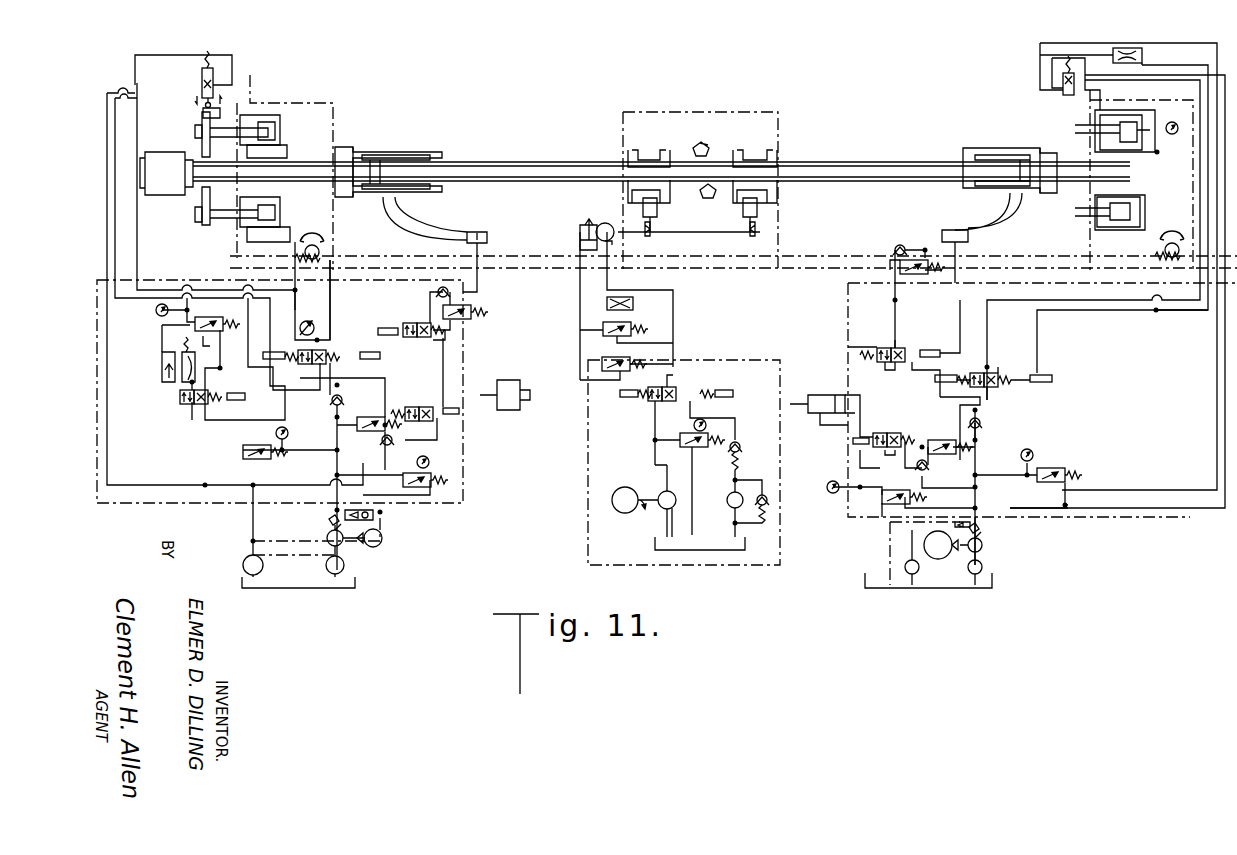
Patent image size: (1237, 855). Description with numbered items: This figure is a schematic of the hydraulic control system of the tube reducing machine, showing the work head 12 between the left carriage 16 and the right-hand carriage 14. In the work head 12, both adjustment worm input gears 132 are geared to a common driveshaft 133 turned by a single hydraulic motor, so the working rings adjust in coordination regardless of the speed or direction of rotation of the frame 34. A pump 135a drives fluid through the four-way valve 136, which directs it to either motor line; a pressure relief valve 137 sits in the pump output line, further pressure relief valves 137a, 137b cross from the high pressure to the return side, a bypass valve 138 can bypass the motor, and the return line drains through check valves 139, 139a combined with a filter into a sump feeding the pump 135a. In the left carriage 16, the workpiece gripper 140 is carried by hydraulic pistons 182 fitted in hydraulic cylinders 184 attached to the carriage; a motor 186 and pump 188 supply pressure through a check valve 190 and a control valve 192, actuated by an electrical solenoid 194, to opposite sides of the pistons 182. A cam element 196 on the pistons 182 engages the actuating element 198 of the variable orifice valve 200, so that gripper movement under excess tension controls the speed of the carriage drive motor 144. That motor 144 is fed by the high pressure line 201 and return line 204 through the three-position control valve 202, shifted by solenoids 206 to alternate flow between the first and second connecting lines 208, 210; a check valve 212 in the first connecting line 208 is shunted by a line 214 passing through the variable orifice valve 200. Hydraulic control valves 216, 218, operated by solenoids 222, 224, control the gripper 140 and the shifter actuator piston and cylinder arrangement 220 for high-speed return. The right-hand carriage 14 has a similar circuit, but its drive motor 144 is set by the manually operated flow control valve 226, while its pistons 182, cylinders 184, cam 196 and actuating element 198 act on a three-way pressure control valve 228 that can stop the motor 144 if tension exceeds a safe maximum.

The work head 12 is at (620, 115).
The right-hand carriage 14 is at (1010, 105).
The left carriage 16 is at (346, 118).
The frame 34 is at (609, 224).
The adjustment worm input gears 132 is at (651, 238).
The common driveshaft 133 is at (705, 230).
The pump 135a is at (663, 490).
The four-way valve 136 is at (684, 390).
The pressure relief valve 137 is at (695, 450).
The pressure relief valve 137a is at (603, 327).
The pressure relief valve 137b is at (602, 364).
The bypass valve 138 is at (615, 297).
The check valve 139 is at (742, 447).
The check valve 139a is at (768, 504).
The workpiece gripper 140 is at (395, 152).
The carriage drive motor 144 is at (320, 250).
The hydraulic pistons 182 is at (275, 130).
The hydraulic cylinders 184 is at (258, 115).
The motor 186 is at (382, 540).
The pump 188 is at (328, 544).
The check valve 190 is at (343, 401).
The control valve 192 is at (208, 405).
The electrical solenoid 194 is at (226, 385).
The cam element 196 is at (199, 122).
The actuating element 198 is at (203, 110).
The variable orifice valve 200 is at (203, 86).
The high pressure line 201 is at (337, 450).
The three-position control valve 202 is at (325, 363).
The return line 204 is at (365, 359).
The solenoids 206 is at (272, 359).
The first connecting line 208 is at (298, 306).
The second connecting line 210 is at (331, 314).
The check valve 212 is at (303, 328).
The line 214 is at (133, 240).
The hydraulic control valve 216 is at (410, 325).
The hydraulic control valve 218 is at (432, 418).
The shifter actuator piston and cylinder arrangement 220 is at (512, 410).
The solenoid 222 is at (378, 332).
The solenoid 224 is at (452, 407).
The manually operated flow control valve 226 is at (1128, 48).
The three-way pressure control valve 228 is at (1063, 80).